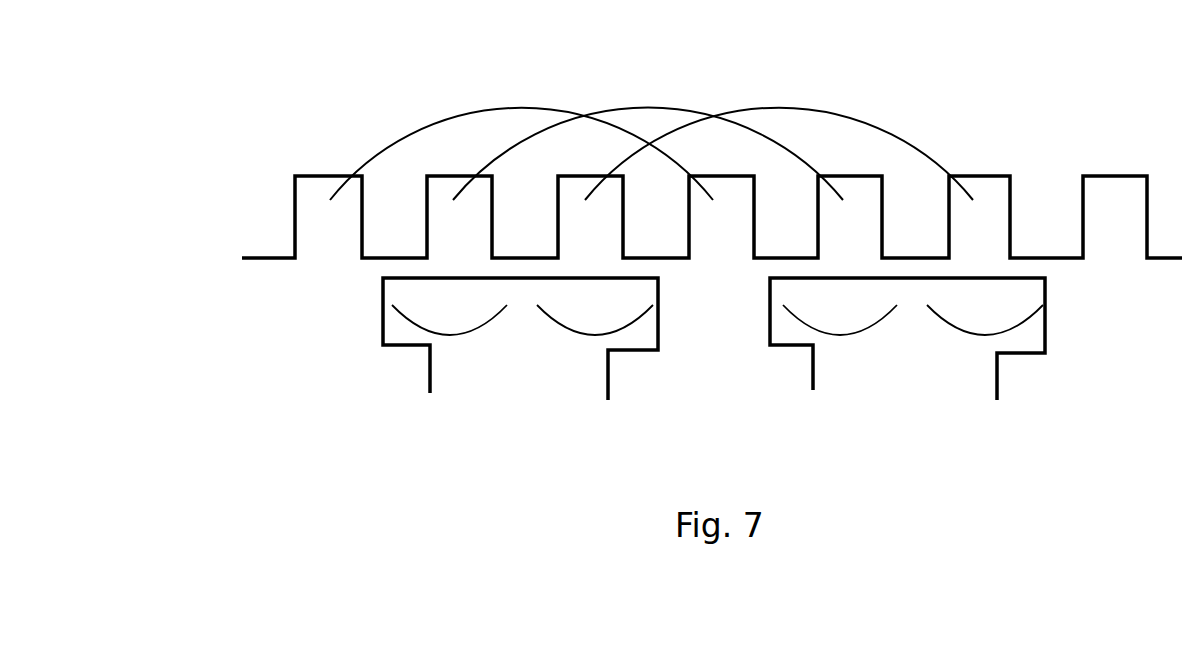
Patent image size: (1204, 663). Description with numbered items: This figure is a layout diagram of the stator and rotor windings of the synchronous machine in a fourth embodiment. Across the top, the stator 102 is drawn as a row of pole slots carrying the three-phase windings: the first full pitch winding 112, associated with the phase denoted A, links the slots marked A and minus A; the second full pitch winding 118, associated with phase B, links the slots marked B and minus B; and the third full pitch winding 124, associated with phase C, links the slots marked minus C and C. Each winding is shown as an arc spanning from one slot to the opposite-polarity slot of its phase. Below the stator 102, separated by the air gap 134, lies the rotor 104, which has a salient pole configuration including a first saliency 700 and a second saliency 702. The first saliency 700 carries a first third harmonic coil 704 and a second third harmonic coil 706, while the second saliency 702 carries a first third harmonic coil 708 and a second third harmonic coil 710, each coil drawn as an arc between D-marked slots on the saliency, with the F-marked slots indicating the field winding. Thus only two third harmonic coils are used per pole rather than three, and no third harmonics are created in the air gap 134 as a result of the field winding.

The stator 102 is at (290, 241).
The rotor 104 is at (1048, 326).
The first full pitch winding 112 is at (430, 125).
The second full pitch winding 118 is at (845, 118).
The third full pitch winding 124 is at (653, 108).
The air gap 134 is at (375, 271).
The first saliency 700 is at (524, 355).
The second saliency 702 is at (906, 353).
The first third harmonic coil 704 is at (450, 336).
The second third harmonic coil 706 is at (592, 337).
The first third harmonic coil 708 is at (837, 337).
The second third harmonic coil 710 is at (980, 337).